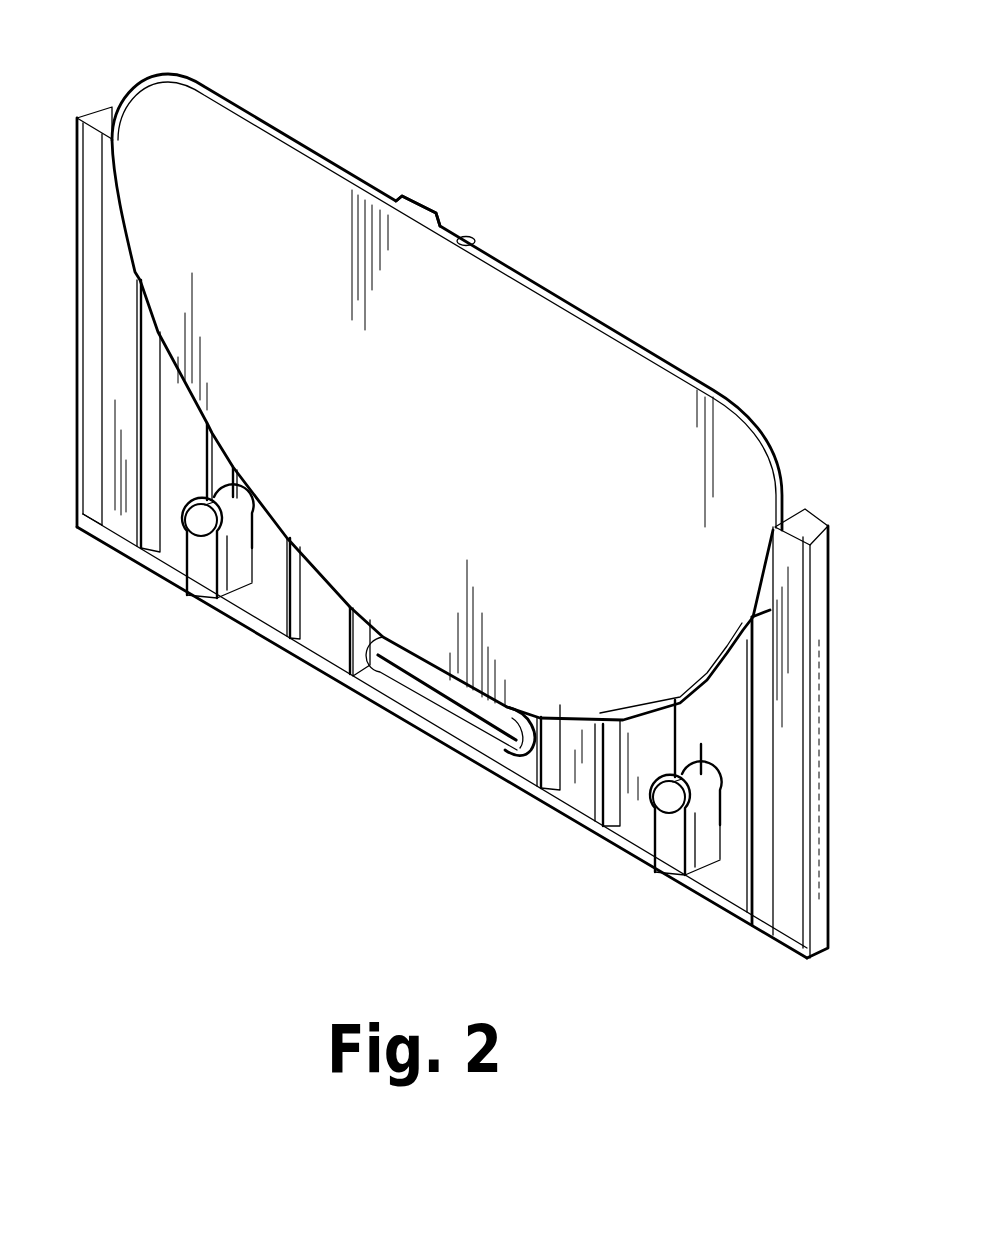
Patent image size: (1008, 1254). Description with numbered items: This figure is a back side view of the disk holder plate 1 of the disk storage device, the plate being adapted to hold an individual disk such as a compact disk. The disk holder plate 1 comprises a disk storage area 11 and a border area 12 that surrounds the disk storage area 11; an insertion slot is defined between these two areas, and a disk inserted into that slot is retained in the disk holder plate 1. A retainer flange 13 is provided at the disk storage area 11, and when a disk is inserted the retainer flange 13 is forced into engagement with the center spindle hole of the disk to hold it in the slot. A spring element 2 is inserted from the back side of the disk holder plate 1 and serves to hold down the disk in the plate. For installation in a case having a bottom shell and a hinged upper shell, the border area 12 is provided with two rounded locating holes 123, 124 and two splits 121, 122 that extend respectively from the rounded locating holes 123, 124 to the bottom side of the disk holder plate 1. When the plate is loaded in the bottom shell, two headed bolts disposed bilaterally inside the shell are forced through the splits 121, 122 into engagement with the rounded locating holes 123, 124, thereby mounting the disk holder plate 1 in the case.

The disk holder plate 1 is at (90, 104).
The disk storage area 11 is at (273, 150).
The retainer flange 13 is at (434, 219).
The border area 12 is at (820, 660).
The spring element 2 is at (497, 750).
The split 121 is at (627, 844).
The split 122 is at (160, 569).
The rounded locating hole 123 is at (673, 800).
The rounded locating hole 124 is at (198, 518).